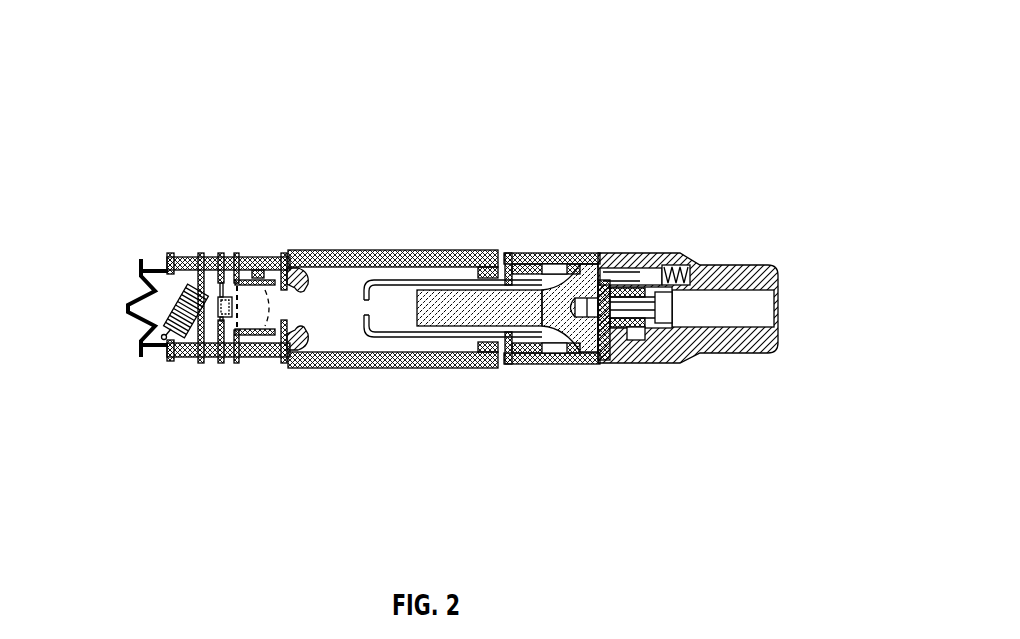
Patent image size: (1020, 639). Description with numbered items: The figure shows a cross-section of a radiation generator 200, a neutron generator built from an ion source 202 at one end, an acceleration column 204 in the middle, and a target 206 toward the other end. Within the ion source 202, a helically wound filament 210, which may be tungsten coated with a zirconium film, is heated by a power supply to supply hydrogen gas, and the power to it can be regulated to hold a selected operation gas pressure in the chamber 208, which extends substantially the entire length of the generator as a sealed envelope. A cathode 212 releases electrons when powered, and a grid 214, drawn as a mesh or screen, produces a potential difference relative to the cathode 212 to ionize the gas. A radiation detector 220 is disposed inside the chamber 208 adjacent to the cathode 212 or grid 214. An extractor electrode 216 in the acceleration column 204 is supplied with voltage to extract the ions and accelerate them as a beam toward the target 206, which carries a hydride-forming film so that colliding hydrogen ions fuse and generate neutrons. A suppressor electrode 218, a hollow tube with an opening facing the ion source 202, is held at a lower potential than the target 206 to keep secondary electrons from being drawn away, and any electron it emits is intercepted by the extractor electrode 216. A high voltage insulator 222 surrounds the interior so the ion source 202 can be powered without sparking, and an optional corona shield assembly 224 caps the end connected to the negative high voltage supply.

The radiation generator 200 is at (134, 72).
The ion source 202 is at (277, 478).
The acceleration column 204 is at (365, 70).
The target 206 is at (452, 335).
The chamber 208 is at (147, 277).
The filament 210 is at (190, 278).
The cathode 212 is at (223, 256).
The grid 214 is at (236, 363).
The extractor electrode 216 is at (300, 250).
The suppressor electrode 218 is at (403, 270).
The radiation detector 220 is at (256, 262).
The high voltage insulator 222 is at (345, 372).
The corona shield assembly 224 is at (646, 245).